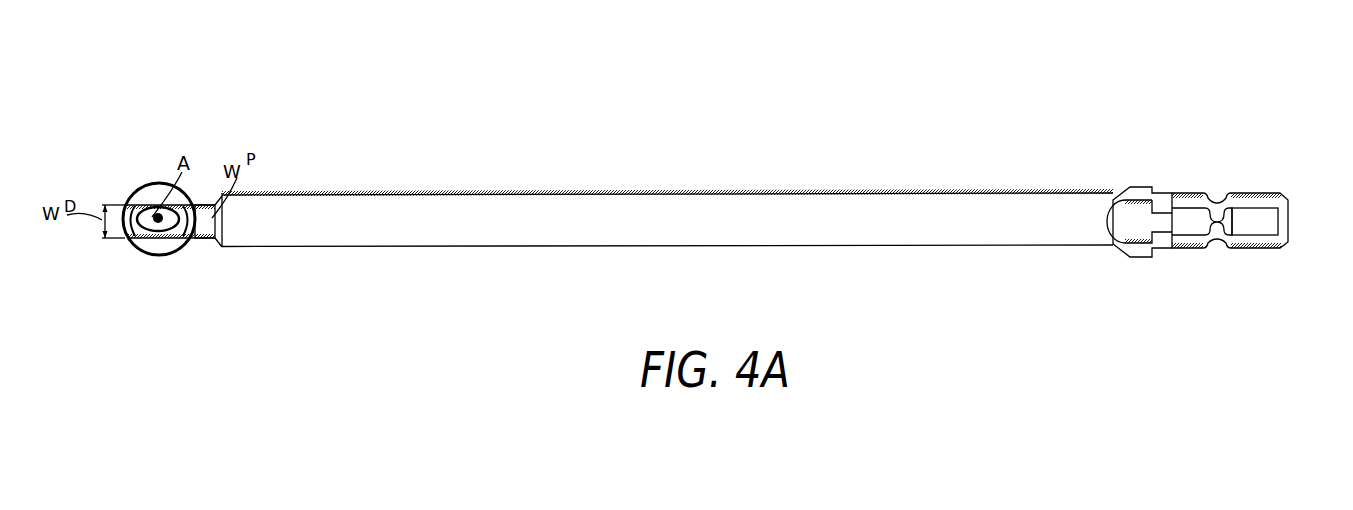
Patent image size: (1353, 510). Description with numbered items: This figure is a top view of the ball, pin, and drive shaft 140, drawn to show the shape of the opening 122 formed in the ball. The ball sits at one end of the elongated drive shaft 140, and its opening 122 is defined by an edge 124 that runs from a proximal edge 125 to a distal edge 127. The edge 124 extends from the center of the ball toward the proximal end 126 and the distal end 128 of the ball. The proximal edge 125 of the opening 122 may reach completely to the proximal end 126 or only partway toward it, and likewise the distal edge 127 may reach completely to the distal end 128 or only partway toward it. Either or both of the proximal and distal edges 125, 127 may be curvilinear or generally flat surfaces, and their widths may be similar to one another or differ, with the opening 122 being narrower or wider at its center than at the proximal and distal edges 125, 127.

The drive shaft 140 is at (610, 195).
The distal end 128 is at (127, 205).
The opening 122 is at (147, 187).
The edge 124 is at (158, 238).
The proximal edge 125 is at (183, 227).
The proximal end 126 is at (198, 240).
The distal edge 127 is at (133, 237).